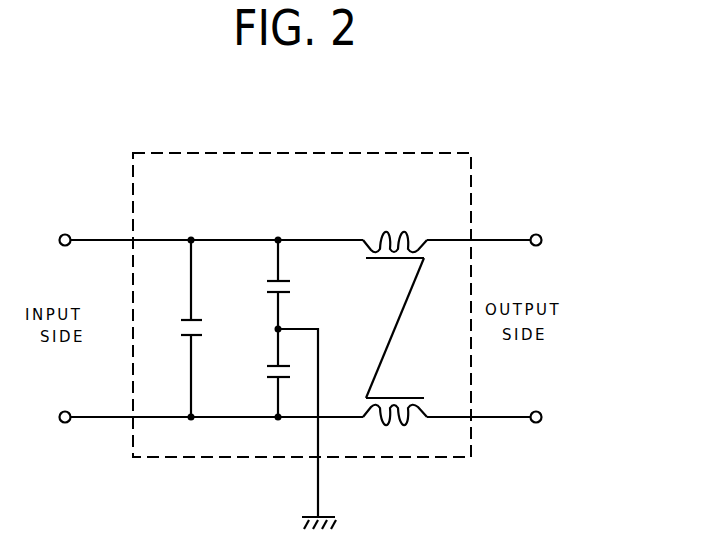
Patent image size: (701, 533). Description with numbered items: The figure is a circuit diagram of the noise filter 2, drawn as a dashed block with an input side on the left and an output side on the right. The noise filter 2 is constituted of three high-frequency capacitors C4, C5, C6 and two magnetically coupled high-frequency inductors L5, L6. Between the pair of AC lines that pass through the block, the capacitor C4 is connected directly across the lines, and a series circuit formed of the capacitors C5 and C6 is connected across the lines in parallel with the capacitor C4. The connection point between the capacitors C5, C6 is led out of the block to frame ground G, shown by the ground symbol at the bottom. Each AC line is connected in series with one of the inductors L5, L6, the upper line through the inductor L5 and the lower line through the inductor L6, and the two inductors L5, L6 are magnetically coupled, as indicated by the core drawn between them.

The noise filter 2 is at (232, 153).
The high-frequency capacitor C4 is at (209, 328).
The high-frequency capacitor C5 is at (257, 284).
The high-frequency capacitor C6 is at (257, 373).
The high-frequency inductor L5 is at (395, 227).
The high-frequency inductor L6 is at (395, 428).
The frame ground G is at (322, 431).